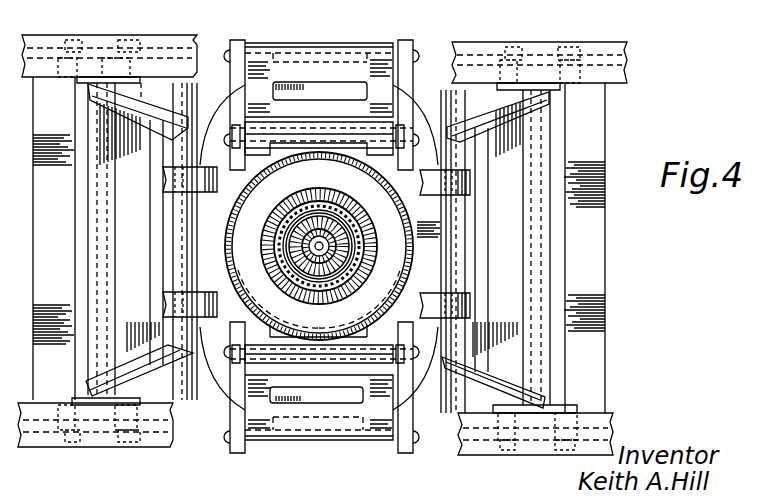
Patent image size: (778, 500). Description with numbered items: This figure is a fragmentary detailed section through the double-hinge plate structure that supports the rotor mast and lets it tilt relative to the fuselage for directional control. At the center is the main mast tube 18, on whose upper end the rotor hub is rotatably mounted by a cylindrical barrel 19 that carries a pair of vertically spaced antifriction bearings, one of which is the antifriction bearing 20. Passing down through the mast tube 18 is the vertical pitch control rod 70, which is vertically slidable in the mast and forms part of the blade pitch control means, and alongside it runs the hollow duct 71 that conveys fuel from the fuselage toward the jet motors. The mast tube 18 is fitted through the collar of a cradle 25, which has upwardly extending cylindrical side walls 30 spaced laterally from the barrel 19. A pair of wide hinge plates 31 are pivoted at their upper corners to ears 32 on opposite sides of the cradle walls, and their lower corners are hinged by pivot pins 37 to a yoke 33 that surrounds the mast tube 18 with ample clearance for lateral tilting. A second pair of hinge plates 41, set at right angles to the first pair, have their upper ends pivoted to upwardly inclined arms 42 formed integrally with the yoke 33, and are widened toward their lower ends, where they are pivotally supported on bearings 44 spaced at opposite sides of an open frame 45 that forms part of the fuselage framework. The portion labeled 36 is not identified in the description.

The main mast tube 18 is at (322, 268).
The cylindrical barrel 19 is at (300, 199).
The antifriction bearing 20 is at (332, 207).
The cradle 25 is at (423, 262).
The cylindrical side walls 30 is at (232, 272).
The hinge plates 31 is at (258, 70).
The ears 32 is at (232, 125).
The yoke 33 is at (213, 352).
The cross rail 36 is at (416, 133).
The pivot pins 37 is at (300, 52).
The hinge plates 41 is at (150, 118).
The arms 42 is at (165, 185).
The bearings 44 is at (85, 80).
The open frame 45 is at (168, 42).
The pitch control rod 70 is at (307, 266).
The hollow duct 71 is at (308, 245).